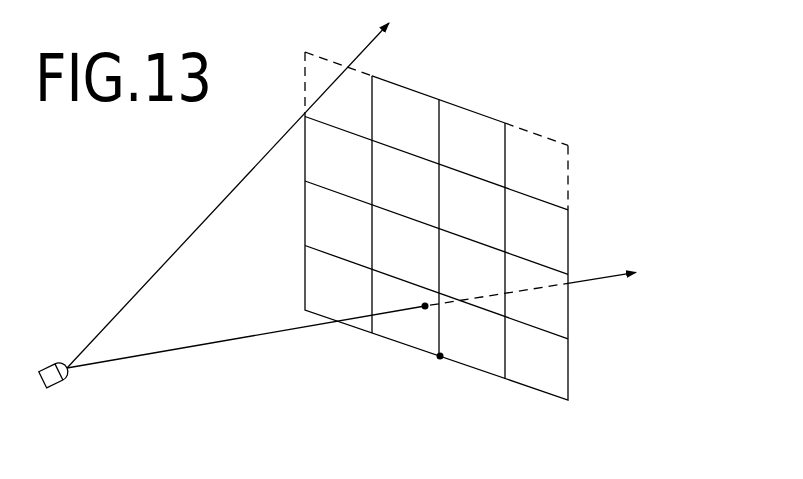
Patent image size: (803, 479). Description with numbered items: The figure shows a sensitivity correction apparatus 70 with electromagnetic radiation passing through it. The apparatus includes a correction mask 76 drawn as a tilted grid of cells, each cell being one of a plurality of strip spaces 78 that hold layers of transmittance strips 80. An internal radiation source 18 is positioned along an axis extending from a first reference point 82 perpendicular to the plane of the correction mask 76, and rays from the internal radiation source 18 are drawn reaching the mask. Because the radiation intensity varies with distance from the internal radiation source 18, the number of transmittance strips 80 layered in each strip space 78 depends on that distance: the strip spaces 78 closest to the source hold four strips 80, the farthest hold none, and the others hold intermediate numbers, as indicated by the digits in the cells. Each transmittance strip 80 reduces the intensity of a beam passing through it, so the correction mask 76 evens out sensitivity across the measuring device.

The internal radiation source 18 is at (56, 380).
The sensitivity correction apparatus 70 is at (548, 59).
The correction mask 76 is at (553, 129).
The strip spaces 78 is at (330, 83).
The transmittance strips 80 is at (458, 118).
The first reference point 82 is at (436, 362).